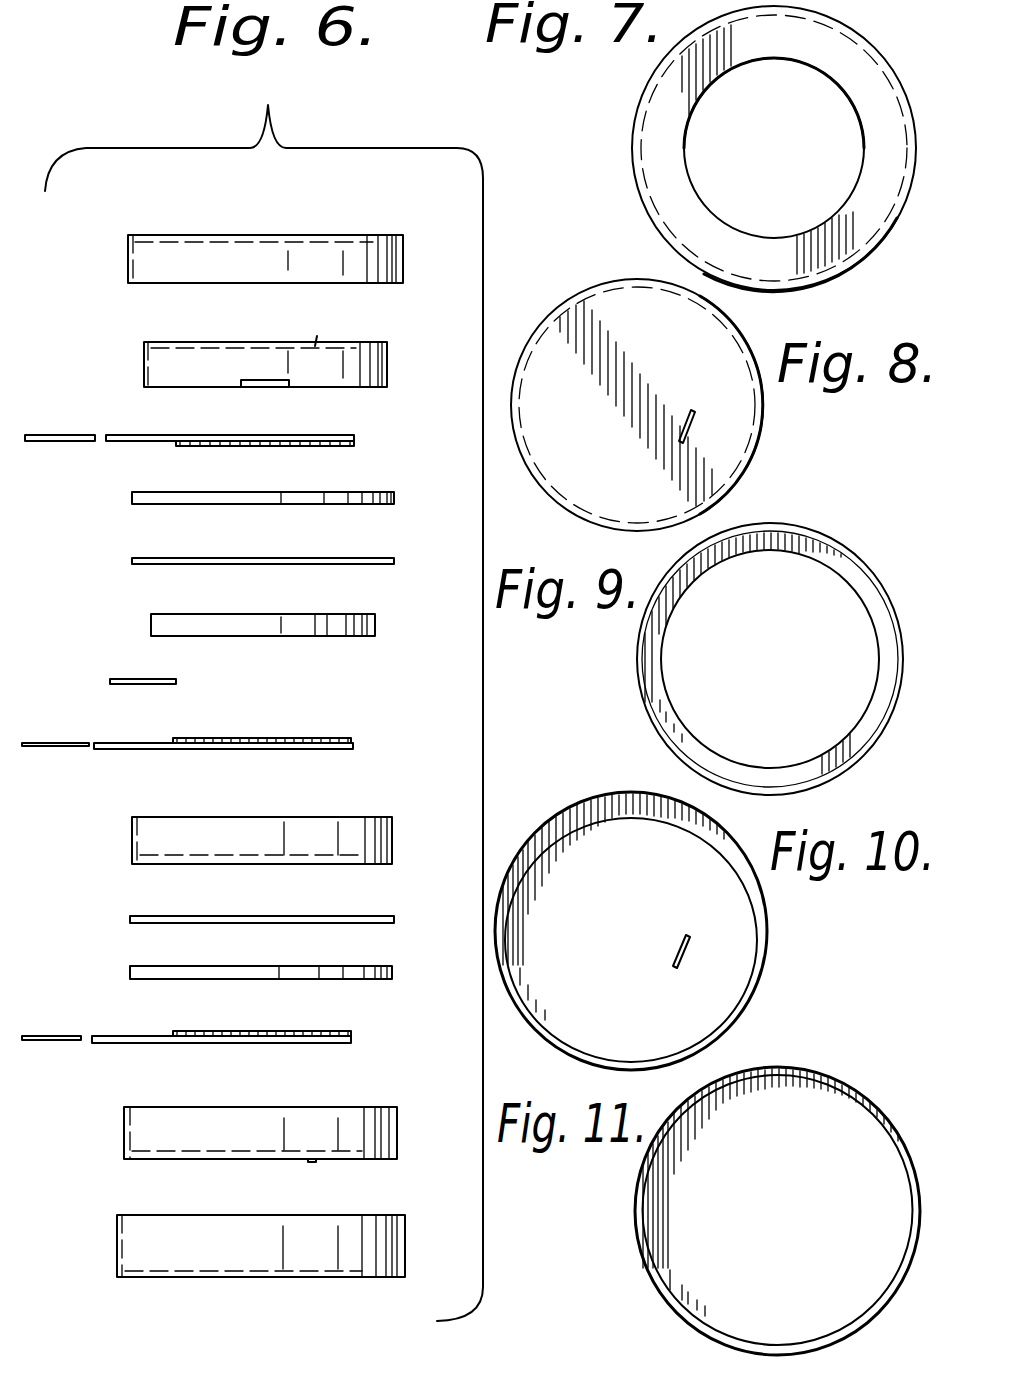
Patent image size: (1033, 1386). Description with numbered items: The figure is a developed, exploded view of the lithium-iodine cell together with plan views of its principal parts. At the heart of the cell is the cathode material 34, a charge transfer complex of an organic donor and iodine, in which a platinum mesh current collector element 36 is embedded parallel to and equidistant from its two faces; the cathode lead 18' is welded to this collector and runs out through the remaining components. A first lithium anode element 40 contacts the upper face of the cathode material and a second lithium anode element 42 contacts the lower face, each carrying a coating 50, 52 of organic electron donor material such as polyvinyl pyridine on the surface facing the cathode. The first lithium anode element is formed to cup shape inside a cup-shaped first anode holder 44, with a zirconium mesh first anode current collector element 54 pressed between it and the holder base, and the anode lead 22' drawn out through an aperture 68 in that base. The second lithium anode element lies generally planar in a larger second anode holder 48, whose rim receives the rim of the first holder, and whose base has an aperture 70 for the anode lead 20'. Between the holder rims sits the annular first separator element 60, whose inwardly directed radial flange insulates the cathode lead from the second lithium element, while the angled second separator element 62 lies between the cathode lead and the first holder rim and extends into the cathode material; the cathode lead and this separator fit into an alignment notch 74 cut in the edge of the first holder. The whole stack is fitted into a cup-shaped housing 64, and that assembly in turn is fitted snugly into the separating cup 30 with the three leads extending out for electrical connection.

In FIG. 6, the cathode lead 18' is at (92, 769).
In FIG. 6, the anode lead 20' is at (186, 1016).
In FIG. 6, the anode lead 22' is at (189, 417).
In FIG. 6, the separating cup 30 is at (137, 1240).
In FIG. 11, the separating cup 30 is at (717, 1286).
In FIG. 6, the cathode material 34 is at (167, 614).
In FIG. 6, the current collector element 36 is at (297, 738).
In FIG. 6, the first lithium anode element 40 is at (154, 493).
In FIG. 6, the second lithium anode element 42 is at (365, 966).
In FIG. 6, the first anode holder 44 is at (387, 367).
In FIG. 8, the first anode holder 44 is at (757, 442).
In FIG. 6, the second anode holder 48 is at (397, 1126).
In FIG. 10, the second anode holder 48 is at (767, 938).
In FIG. 6, the coating 50 is at (362, 558).
In FIG. 6, the coating 52 is at (138, 916).
In FIG. 6, the first anode current collector element 54 is at (319, 444).
In FIG. 6, the first separator element 60 is at (392, 833).
In FIG. 9, the first separator element 60 is at (640, 695).
In FIG. 6, the second separator element 62 is at (162, 679).
In FIG. 6, the cup-shaped housing 64 is at (135, 257).
In FIG. 7, the cup-shaped housing 64 is at (652, 152).
In FIG. 6, the aperture 68 is at (319, 336).
In FIG. 8, the aperture 68 is at (688, 418).
In FIG. 6, the aperture 70 is at (313, 1162).
In FIG. 10, the aperture 70 is at (685, 943).
In FIG. 6, the alignment notch 74 is at (262, 389).